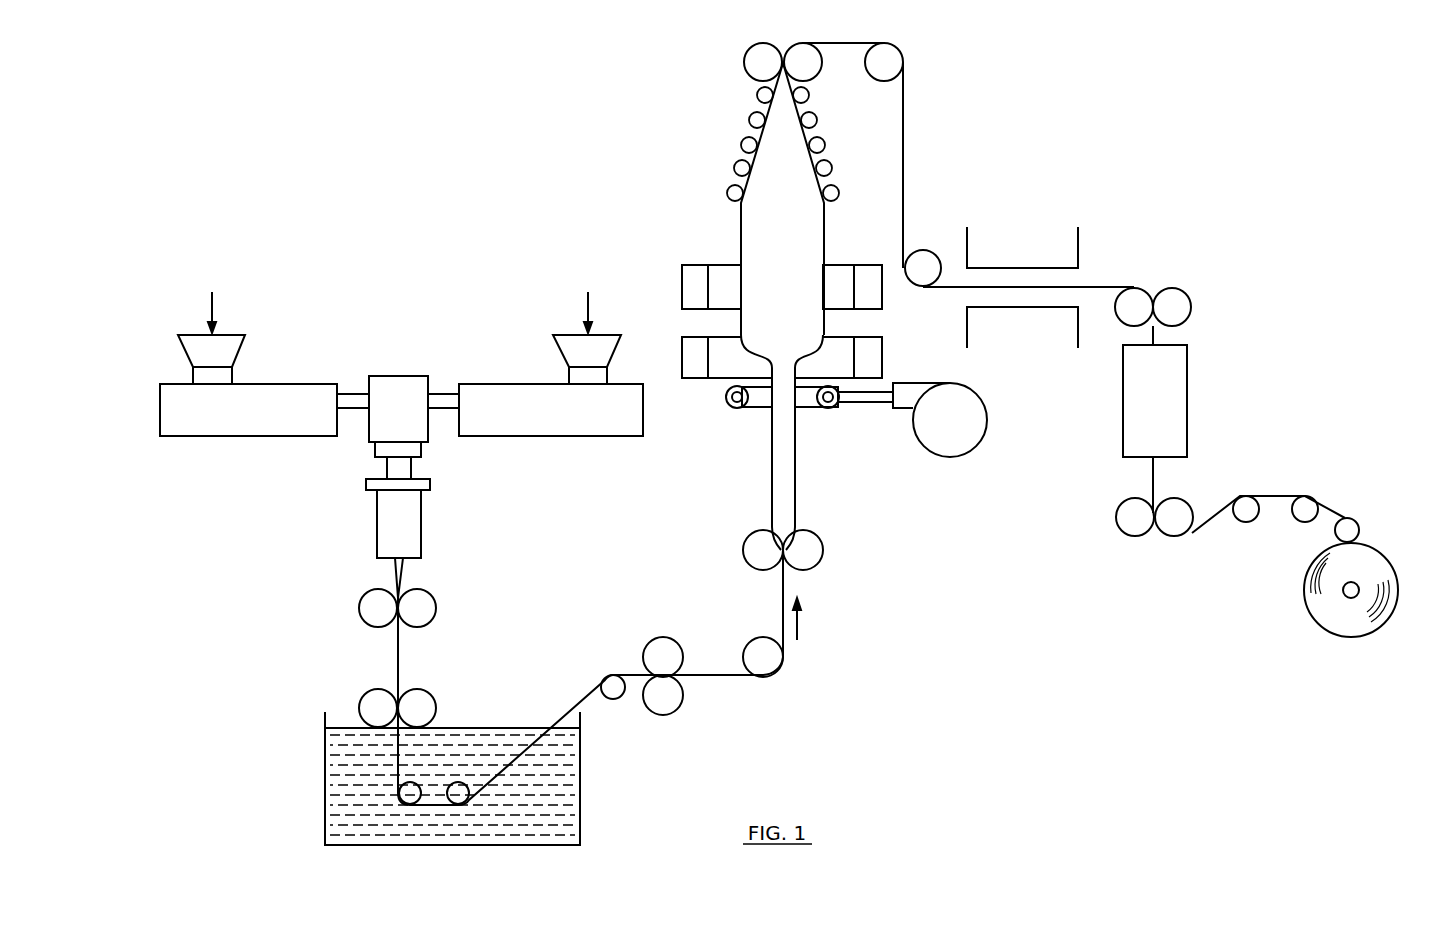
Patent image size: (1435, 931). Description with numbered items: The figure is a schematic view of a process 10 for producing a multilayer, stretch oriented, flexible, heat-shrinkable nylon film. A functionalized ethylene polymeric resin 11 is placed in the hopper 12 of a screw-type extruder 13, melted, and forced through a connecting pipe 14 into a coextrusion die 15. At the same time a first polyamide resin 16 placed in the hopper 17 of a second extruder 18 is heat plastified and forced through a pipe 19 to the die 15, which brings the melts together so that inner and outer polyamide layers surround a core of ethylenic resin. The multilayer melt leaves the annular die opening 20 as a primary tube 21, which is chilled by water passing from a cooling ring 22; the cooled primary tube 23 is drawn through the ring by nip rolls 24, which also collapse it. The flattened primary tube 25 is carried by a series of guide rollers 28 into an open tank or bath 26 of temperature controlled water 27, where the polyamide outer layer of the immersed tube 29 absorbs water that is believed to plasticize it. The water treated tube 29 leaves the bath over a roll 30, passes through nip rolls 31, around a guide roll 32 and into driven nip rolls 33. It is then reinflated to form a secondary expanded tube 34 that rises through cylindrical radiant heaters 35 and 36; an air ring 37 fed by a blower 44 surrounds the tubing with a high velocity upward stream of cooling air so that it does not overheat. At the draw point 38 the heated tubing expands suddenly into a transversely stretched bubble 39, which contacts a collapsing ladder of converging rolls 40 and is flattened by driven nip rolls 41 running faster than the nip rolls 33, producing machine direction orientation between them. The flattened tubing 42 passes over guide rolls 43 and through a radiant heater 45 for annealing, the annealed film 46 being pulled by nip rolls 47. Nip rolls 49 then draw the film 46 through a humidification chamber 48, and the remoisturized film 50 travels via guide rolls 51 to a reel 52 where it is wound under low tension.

The process 10 is at (404, 288).
The functionalized ethylene polymeric resin 11 is at (196, 312).
The hopper 12 is at (223, 355).
The screw-type extruder 13 is at (210, 432).
The connecting pipe 14 is at (355, 398).
The coextrusion die 15 is at (404, 388).
The first polyamide resin 16 is at (573, 312).
The hopper 17 is at (578, 360).
The second extruder 18 is at (527, 433).
The pipe 19 is at (445, 398).
The annular die opening 20 is at (376, 450).
The primary tube 21 is at (407, 468).
The cooling ring 22 is at (413, 535).
The cooled primary tube 23 is at (395, 568).
The nip rolls 24 is at (378, 617).
The flattened primary tube 25 is at (400, 672).
The tank or bath 26 is at (580, 818).
The water 27 is at (345, 780).
The guide rollers 28 is at (457, 790).
The immersed tube 29 is at (555, 718).
The roll 30 is at (608, 680).
The nip rolls 31 is at (662, 648).
The guide roll 32 is at (768, 662).
The nip rolls 33 is at (765, 560).
The secondary expanded tube 34 is at (797, 470).
The radiant heater 35 is at (695, 355).
The radiant heater 36 is at (695, 283).
The air ring 37 is at (738, 408).
The draw point 38 is at (808, 365).
The stretched bubble 39 is at (741, 242).
The converging rolls 40 is at (740, 198).
The nip rolls 41 is at (752, 58).
The flattened tubing 42 is at (850, 40).
The guide rolls 43 is at (892, 68).
The blower 44 is at (948, 440).
The radiant heater 45 is at (1018, 266).
The annealed film 46 is at (1083, 287).
The nip rolls 47 is at (1177, 310).
The humidification chamber 48 is at (1172, 414).
The nip rolls 49 is at (1175, 528).
The remoisturized film 50 is at (1215, 510).
The guide rolls 51 is at (1247, 518).
The reel 52 is at (1335, 622).